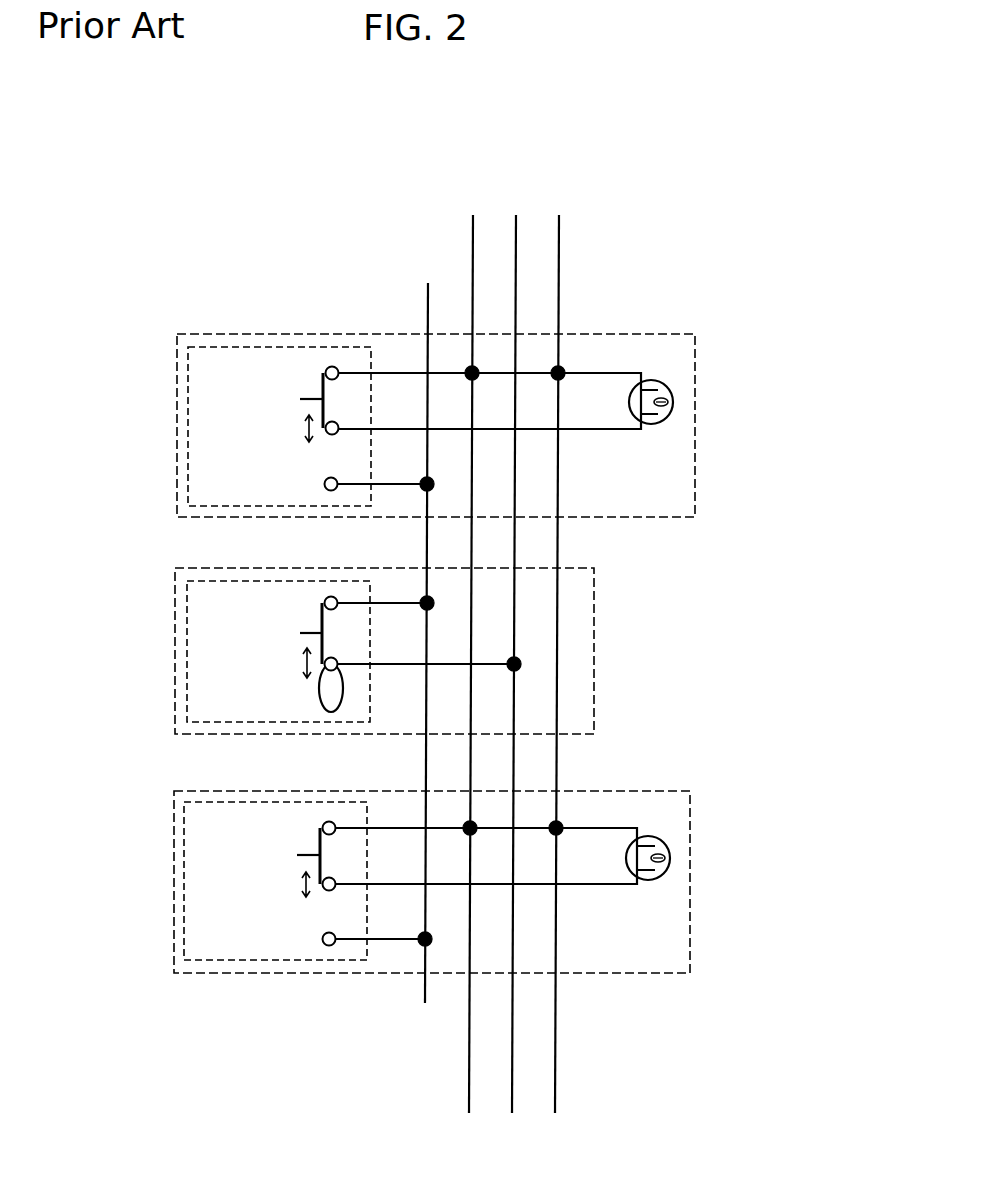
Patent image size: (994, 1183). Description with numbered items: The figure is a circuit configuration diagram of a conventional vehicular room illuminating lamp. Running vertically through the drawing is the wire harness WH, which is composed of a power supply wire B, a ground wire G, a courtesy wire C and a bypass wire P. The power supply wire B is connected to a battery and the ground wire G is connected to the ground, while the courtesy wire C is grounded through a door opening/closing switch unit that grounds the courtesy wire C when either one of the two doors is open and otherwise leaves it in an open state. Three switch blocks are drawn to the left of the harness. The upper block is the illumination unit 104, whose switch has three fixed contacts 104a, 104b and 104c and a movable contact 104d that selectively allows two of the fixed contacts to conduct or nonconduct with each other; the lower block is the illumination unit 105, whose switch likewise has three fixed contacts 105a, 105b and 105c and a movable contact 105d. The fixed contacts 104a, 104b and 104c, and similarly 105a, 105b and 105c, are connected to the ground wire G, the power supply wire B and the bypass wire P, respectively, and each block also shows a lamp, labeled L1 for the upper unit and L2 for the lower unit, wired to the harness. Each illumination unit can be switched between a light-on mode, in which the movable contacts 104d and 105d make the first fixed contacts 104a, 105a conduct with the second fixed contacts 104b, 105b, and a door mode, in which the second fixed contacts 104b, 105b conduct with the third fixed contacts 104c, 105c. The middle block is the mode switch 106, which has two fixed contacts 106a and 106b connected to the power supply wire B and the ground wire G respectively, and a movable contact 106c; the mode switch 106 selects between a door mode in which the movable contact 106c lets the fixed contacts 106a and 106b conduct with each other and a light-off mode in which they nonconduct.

The illumination unit 104 is at (172, 349).
The first fixed contact 104a is at (332, 366).
The second fixed contact 104b is at (332, 435).
The third fixed contact 104c is at (331, 491).
The movable contact 104d is at (307, 398).
The illumination unit 105 is at (172, 806).
The first fixed contact 105a is at (330, 821).
The second fixed contact 105b is at (329, 891).
The third fixed contact 105c is at (329, 946).
The movable contact 105d is at (303, 853).
The mode switch 106 is at (172, 634).
The fixed contact 106a is at (331, 597).
The fixed contact 106b is at (325, 676).
The movable contact 106c is at (322, 618).
The wire harness WH is at (578, 142).
The ground wire G is at (473, 636).
The courtesy wire C is at (516, 636).
The power supply wire B is at (559, 636).
The bypass wire P is at (427, 630).
The first lamp L1 is at (674, 400).
The second lamp L2 is at (670, 857).